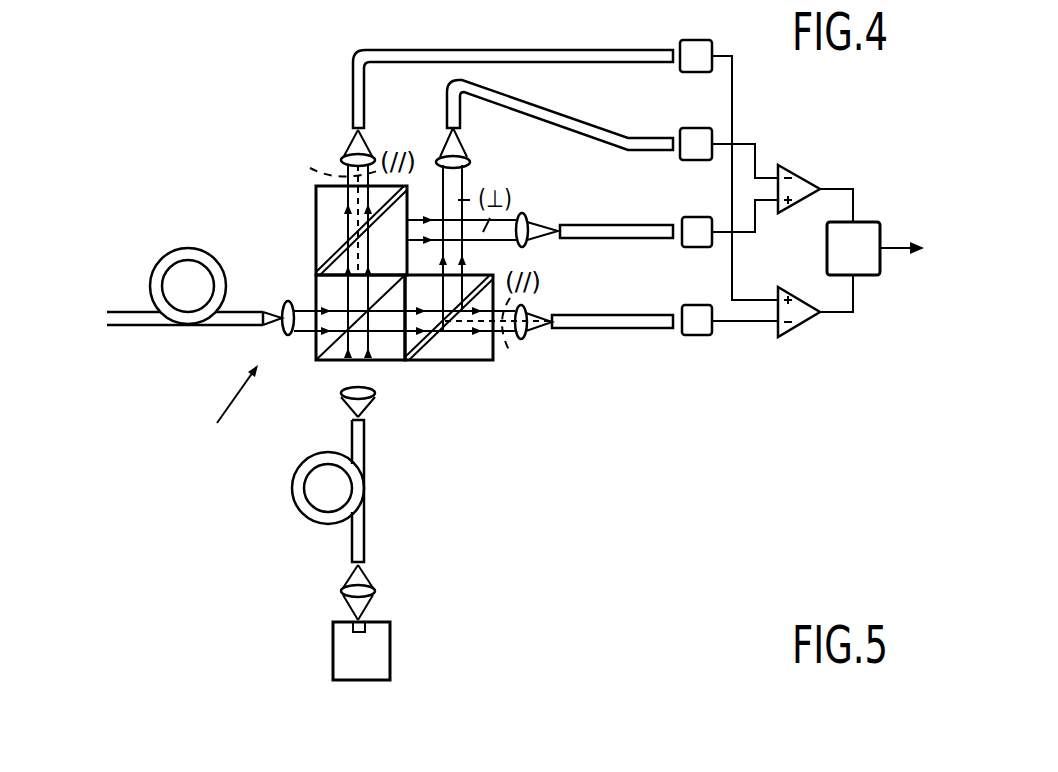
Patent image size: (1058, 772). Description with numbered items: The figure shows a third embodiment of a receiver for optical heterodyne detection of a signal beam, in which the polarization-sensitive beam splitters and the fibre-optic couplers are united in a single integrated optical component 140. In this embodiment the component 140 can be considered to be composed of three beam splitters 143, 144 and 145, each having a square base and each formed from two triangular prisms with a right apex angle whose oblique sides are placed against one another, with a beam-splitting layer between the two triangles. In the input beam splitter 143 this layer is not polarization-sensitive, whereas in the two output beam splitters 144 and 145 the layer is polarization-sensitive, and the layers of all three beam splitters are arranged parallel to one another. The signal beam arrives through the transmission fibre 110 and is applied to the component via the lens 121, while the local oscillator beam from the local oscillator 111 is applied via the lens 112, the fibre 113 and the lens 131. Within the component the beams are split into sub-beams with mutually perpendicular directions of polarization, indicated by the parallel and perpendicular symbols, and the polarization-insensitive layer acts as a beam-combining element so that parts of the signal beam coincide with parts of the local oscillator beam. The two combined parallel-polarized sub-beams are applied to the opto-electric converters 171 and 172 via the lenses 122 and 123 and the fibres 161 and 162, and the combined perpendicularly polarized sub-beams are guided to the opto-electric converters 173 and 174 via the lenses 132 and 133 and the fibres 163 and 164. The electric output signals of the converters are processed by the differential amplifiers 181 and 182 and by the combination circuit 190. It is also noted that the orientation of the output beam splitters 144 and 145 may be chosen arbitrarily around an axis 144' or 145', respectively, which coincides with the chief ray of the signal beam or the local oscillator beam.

The transmission fibre 110 is at (146, 326).
The local oscillator 111 is at (380, 655).
The lens 112 is at (378, 591).
The fibre 113 is at (357, 482).
The lens 121 is at (287, 301).
The lens 122 is at (370, 153).
The lens 123 is at (528, 306).
The lens 131 is at (340, 393).
The lens 132 is at (526, 214).
The lens 133 is at (467, 154).
The integrated optical component 140 is at (216, 457).
The input beam splitter 143 is at (390, 352).
The output beam splitter 144 is at (450, 342).
The axis 144' is at (530, 331).
The output beam splitter 145 is at (328, 229).
The axis 145' is at (324, 159).
The fibre 161 is at (547, 57).
The fibre 162 is at (632, 320).
The fibre 163 is at (604, 230).
The fibre 164 is at (594, 133).
The opto-electric converter 171 is at (705, 48).
The opto-electric converter 172 is at (700, 335).
The opto-electric converter 173 is at (700, 225).
The opto-electric converter 174 is at (697, 135).
The differential amplifier 181 is at (803, 314).
The differential amplifier 182 is at (805, 183).
The combination circuit 190 is at (865, 232).